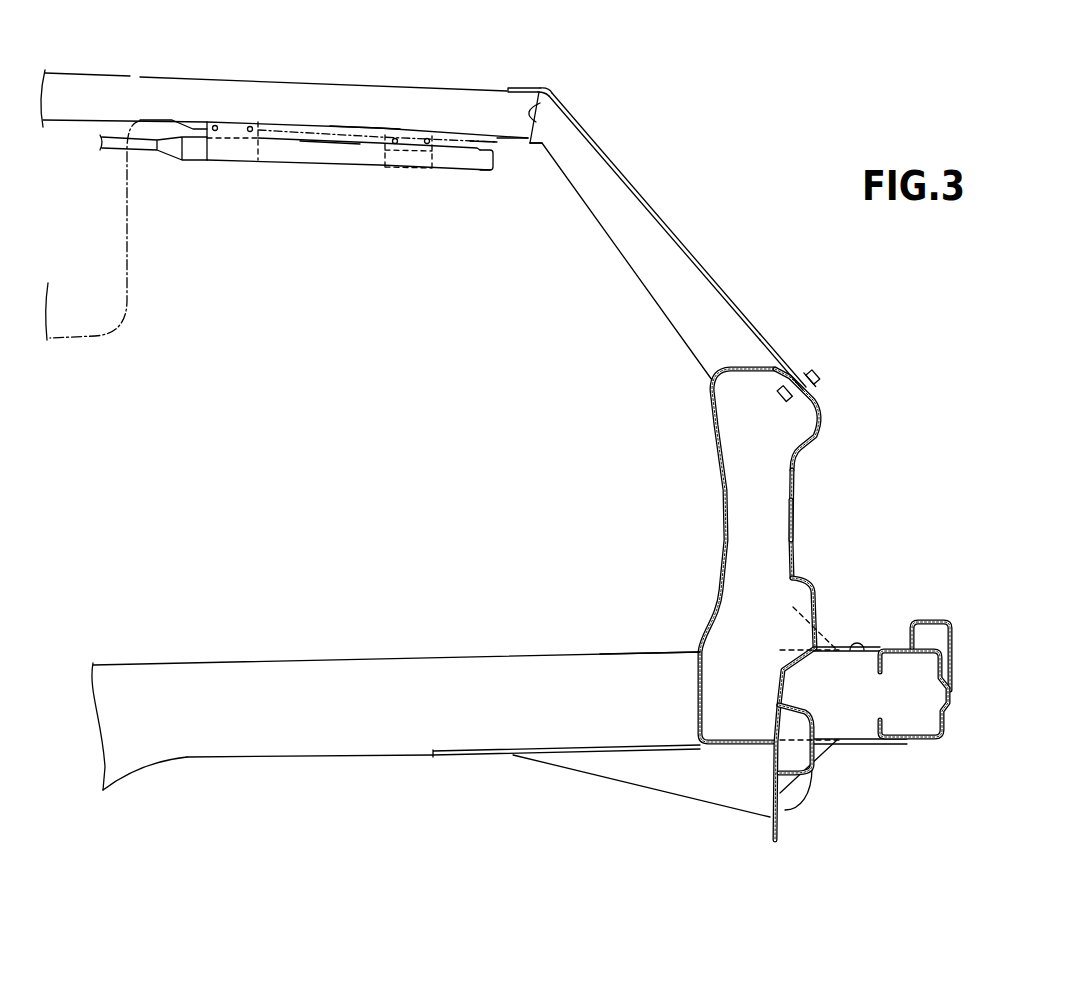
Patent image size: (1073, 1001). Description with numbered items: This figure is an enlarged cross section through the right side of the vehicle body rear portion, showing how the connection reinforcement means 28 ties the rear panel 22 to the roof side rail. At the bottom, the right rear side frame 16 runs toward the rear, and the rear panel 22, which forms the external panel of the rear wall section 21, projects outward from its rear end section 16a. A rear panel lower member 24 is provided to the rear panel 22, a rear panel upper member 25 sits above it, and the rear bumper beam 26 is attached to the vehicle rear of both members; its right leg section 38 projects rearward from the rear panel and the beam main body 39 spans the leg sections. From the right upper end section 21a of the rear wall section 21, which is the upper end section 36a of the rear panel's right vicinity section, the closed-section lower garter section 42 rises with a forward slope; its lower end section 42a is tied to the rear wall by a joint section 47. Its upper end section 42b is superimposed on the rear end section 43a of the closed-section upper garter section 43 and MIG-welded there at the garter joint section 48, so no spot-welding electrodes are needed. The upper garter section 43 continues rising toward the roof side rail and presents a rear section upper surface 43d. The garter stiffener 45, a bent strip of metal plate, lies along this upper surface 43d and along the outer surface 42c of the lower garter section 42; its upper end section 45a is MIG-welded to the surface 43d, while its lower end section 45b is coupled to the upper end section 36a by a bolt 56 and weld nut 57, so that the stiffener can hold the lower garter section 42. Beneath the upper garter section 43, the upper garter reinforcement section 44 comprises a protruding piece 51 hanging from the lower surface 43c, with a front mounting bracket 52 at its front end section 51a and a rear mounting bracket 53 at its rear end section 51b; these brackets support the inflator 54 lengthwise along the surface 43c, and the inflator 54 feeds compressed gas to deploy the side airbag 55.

The rear side frame 16 is at (437, 668).
The rear end section of rear side frame 16a is at (687, 663).
The rear wall section 21 is at (723, 497).
The right upper end section of rear wall section 21a is at (740, 366).
The rear panel 22 is at (793, 487).
The upper end section of right vicinity section 36a is at (821, 400).
The rear panel lower member 24 is at (820, 753).
The rear panel upper member 25 is at (820, 615).
The rear bumper beam 26 is at (962, 663).
The connection reinforcement means 28 is at (712, 152).
The right leg section 38 is at (863, 652).
The beam main body 39 is at (950, 708).
The lower garter section 42 is at (640, 247).
The lower end section of lower garter section 42a is at (760, 357).
The upper end section of lower garter section 42b is at (541, 120).
The outer surface of lower garter section 42c is at (652, 205).
The upper garter section 43 is at (302, 85).
The rear end section of upper garter section 43a is at (520, 139).
The lower surface of upper garter section 43c is at (360, 129).
The rear section upper surface of upper garter section 43d is at (407, 83).
The upper garter reinforcement section 44 is at (283, 250).
The garter stiffener 45 is at (683, 234).
The upper end section of garter stiffener 45a is at (518, 89).
The lower end section of garter stiffener 45b is at (782, 372).
The joint section 47 is at (733, 368).
The garter joint section 48 is at (532, 104).
The protruding piece 51 is at (318, 133).
The front end section of protruding piece 51a is at (197, 128).
The rear end section of protruding piece 51b is at (450, 136).
The front mounting bracket 52 is at (220, 152).
The rear mounting bracket 53 is at (413, 163).
The inflator 54 is at (283, 153).
The side airbag 55 is at (107, 334).
The bolt 56 is at (810, 372).
The weld nut 57 is at (795, 397).